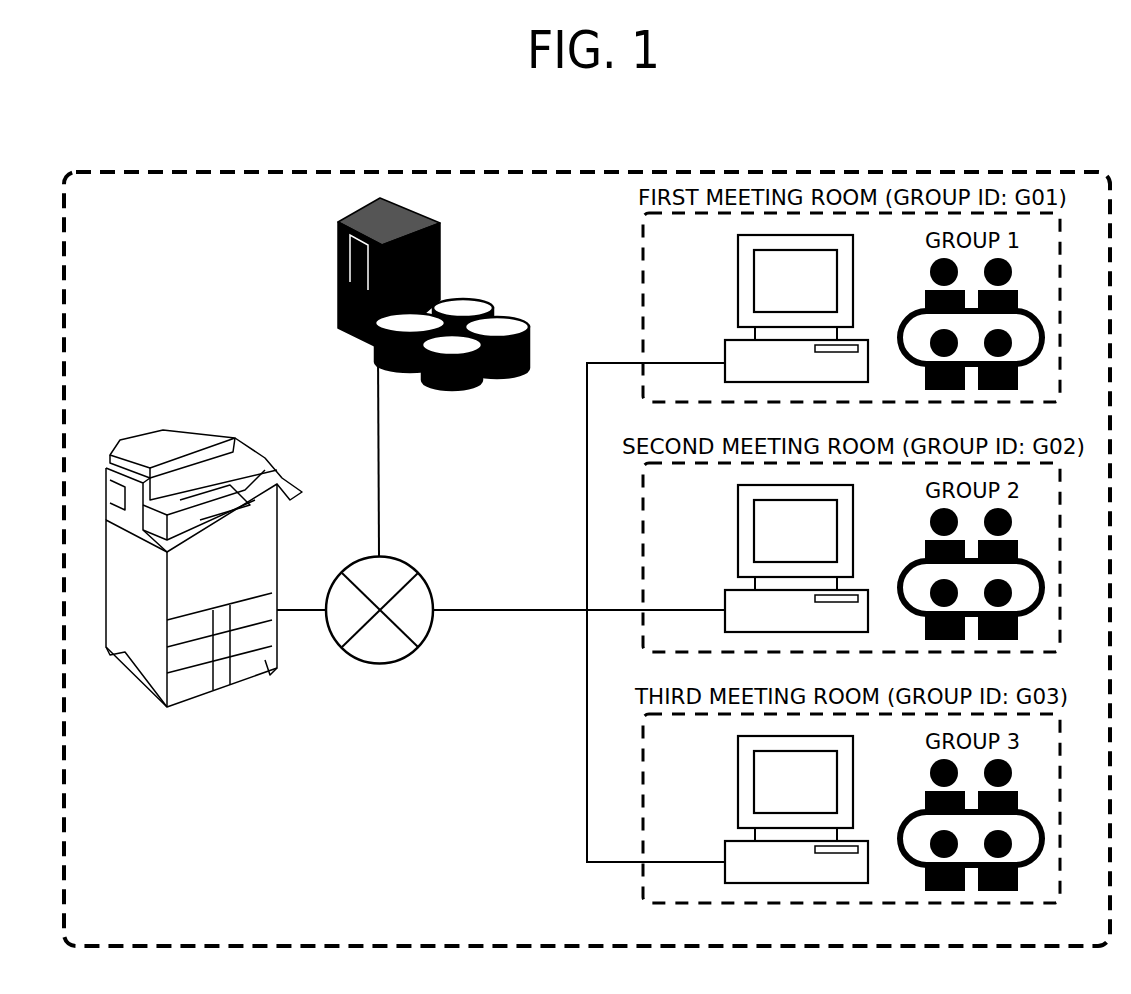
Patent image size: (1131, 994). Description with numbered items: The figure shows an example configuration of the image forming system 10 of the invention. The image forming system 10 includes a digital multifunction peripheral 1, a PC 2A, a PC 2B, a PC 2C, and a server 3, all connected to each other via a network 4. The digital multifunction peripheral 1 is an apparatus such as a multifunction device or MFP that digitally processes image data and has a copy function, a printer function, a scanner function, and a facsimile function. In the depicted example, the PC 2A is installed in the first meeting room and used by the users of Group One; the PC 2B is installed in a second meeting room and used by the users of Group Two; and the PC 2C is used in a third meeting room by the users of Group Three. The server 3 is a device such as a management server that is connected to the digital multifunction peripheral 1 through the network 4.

The digital multifunction peripheral 1 is at (150, 396).
The PC 2A is at (728, 287).
The PC 2B is at (767, 558).
The PC 2C is at (765, 809).
The server 3 is at (338, 297).
The network 4 is at (377, 665).
The image forming system 10 is at (587, 170).